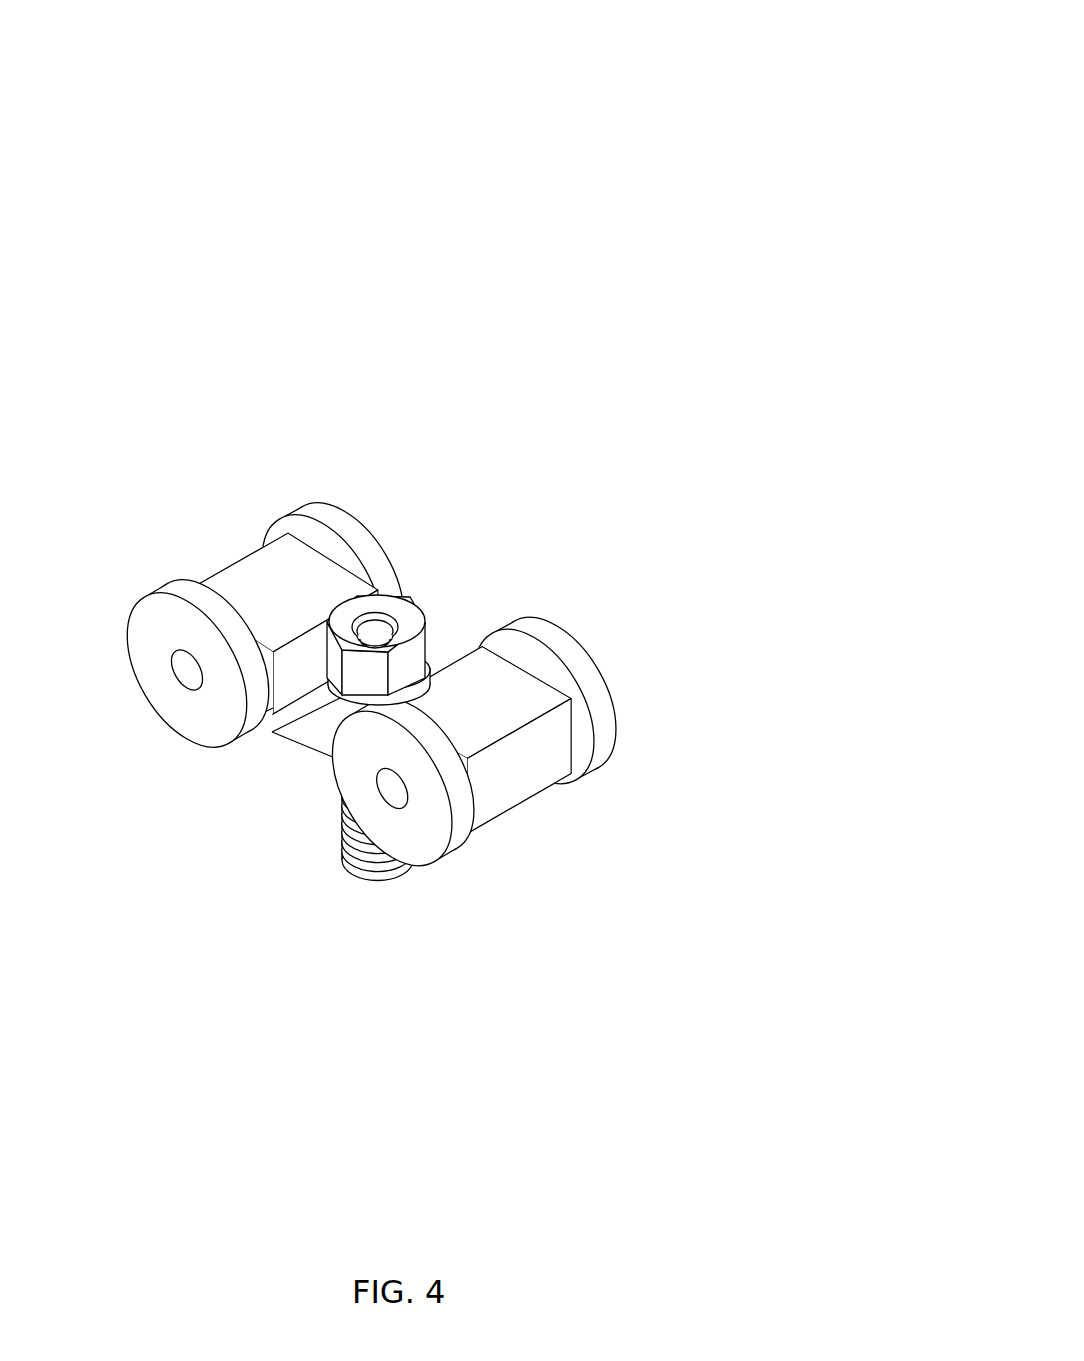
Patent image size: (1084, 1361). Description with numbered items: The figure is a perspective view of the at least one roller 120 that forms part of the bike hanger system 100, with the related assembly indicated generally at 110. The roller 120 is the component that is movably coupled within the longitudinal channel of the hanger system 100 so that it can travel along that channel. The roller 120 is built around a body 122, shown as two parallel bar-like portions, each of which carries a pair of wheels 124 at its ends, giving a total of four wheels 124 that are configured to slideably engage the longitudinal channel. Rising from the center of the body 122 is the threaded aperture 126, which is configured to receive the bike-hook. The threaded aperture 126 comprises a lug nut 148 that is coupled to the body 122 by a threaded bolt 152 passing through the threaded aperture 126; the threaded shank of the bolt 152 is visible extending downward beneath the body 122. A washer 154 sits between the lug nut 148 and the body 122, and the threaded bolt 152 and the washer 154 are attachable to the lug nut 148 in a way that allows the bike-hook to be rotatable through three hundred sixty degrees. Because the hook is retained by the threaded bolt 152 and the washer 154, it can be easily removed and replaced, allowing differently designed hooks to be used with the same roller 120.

The bike hanger system 100 is at (767, 33).
The apparatus 110 is at (768, 78).
The roller 120 is at (610, 478).
The body 122 is at (247, 565).
The wheels 124 is at (165, 597).
The threaded aperture 126 is at (408, 620).
The lug nut 148 is at (447, 607).
The threaded bolt 152 is at (367, 867).
The washer 154 is at (330, 695).